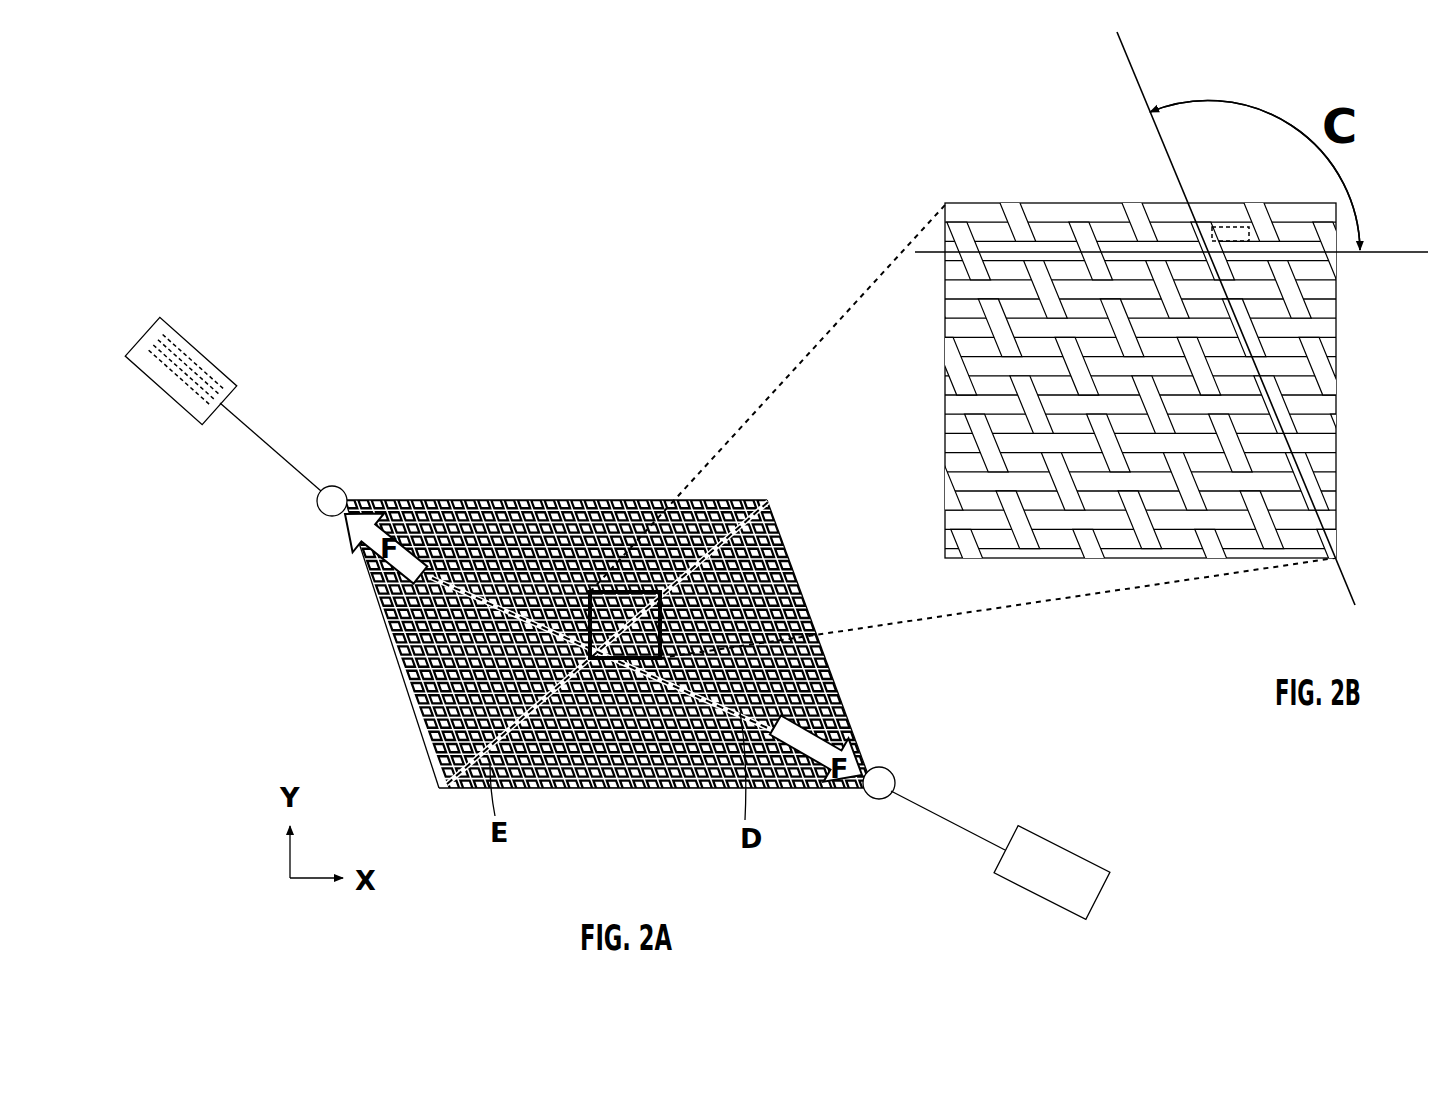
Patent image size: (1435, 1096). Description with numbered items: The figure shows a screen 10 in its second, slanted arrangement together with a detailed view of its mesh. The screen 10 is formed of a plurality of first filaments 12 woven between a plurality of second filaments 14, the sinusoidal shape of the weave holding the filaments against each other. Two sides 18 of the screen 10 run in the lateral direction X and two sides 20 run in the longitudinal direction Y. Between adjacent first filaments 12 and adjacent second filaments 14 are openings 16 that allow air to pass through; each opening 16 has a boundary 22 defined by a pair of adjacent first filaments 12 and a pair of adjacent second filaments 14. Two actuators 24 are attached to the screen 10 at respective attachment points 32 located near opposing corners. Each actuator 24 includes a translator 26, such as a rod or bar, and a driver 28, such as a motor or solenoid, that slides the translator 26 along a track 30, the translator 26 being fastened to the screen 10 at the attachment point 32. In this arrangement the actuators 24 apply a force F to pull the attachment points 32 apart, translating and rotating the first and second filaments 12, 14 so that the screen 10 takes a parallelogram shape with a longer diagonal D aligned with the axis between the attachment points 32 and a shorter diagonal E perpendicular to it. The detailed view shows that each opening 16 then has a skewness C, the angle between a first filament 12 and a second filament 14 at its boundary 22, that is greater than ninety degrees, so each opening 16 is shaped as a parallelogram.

In FIG. 2A, the screen 10 is at (500, 478).
In FIG. 2B, the first filaments 12 is at (1337, 294).
In FIG. 2B, the second filaments 14 is at (1012, 217).
In FIG. 2B, the openings 16 is at (1228, 226).
In FIG. 2A, the sides 18 is at (580, 499).
In FIG. 2A, the sides 20 is at (378, 641).
In FIG. 2B, the boundary 22 is at (1250, 230).
In FIG. 2A, the actuator 24 is at (608, 592).
In FIG. 2A, the translator 26 is at (290, 465).
In FIG. 2A, the driver 28 is at (207, 357).
In FIG. 2A, the track 30 is at (228, 390).
In FIG. 2A, the attachment point 32 is at (338, 494).